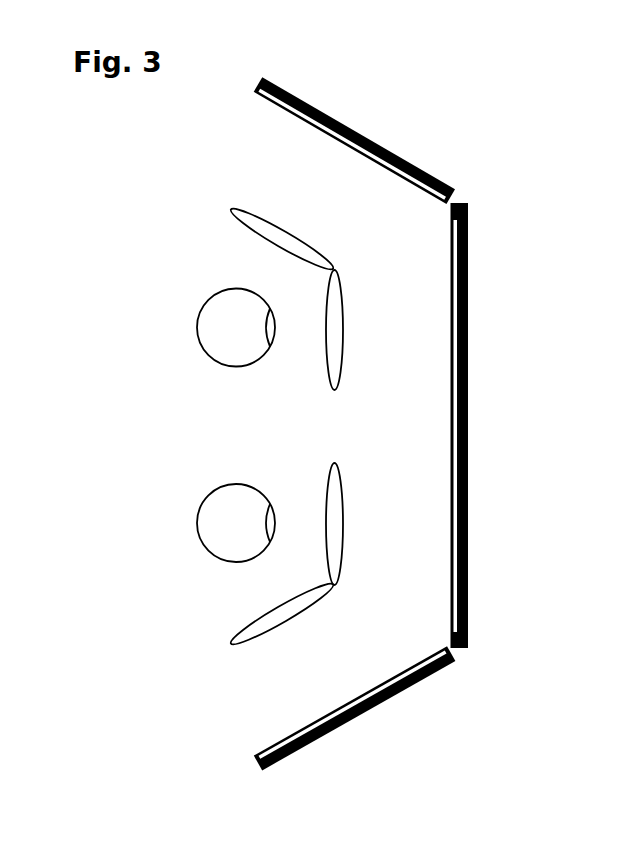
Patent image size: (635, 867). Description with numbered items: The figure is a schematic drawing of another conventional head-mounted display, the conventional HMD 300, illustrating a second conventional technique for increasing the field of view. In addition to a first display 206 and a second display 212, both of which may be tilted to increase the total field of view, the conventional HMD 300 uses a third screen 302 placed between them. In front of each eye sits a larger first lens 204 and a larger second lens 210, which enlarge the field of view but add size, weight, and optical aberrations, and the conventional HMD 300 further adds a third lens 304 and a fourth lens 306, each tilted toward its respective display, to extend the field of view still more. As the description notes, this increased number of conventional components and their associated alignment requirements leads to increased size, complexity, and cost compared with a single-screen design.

The conventional HMD 300 is at (558, 168).
The first display 206 is at (338, 122).
The third screen 302 is at (468, 418).
The second display 212 is at (383, 702).
The third lens 304 is at (286, 240).
The first lens 204 is at (344, 347).
The second lens 210 is at (343, 512).
The fourth lens 306 is at (286, 613).